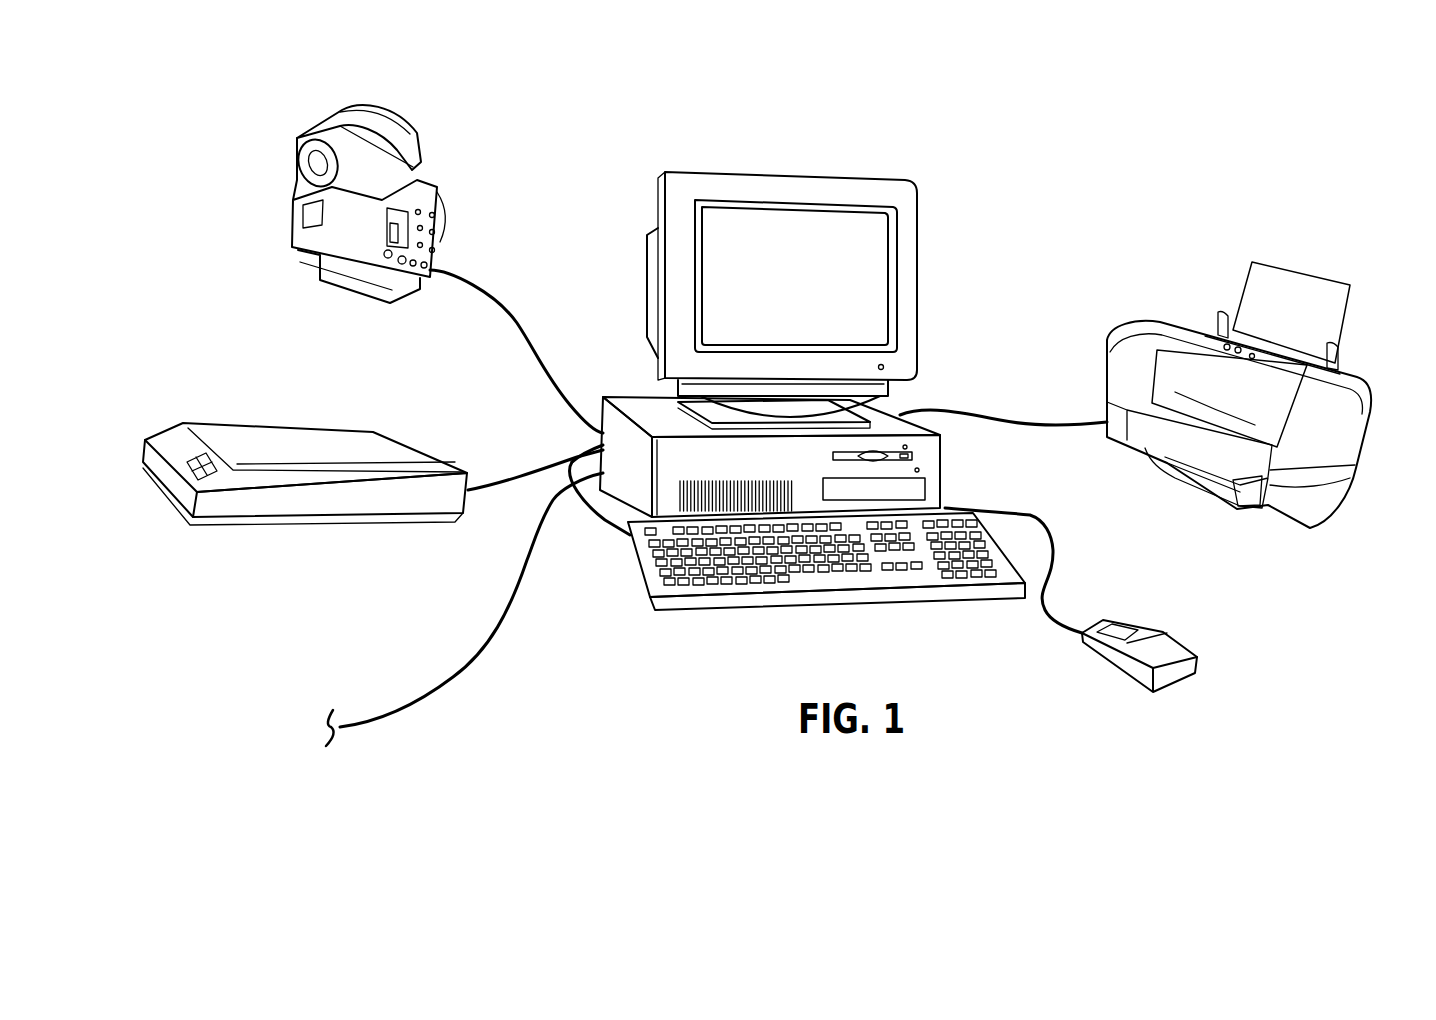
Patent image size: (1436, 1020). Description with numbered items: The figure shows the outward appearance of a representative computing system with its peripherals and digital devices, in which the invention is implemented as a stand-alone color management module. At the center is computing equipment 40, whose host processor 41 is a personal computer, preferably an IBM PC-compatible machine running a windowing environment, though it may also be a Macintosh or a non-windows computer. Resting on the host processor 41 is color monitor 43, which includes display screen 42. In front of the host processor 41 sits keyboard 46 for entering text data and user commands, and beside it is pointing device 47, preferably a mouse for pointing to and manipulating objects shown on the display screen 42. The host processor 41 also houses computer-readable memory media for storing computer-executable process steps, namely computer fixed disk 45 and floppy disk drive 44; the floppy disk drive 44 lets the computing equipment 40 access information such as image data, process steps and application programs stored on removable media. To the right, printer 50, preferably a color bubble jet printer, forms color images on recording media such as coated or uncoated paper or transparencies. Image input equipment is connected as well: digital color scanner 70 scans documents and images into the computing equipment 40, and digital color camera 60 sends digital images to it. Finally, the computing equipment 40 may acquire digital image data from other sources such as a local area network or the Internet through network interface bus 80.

The computing equipment 40 is at (963, 173).
The host processor 41 is at (615, 393).
The display screen 42 is at (872, 303).
The color monitor 43 is at (762, 173).
The floppy disk drive 44 is at (893, 455).
The computer fixed disk 45 is at (918, 492).
The keyboard 46 is at (717, 590).
The pointing device 47 is at (1177, 682).
The printer 50 is at (1105, 257).
The digital color camera 60 is at (437, 182).
The digital color scanner 70 is at (353, 530).
The network interface bus 80 is at (393, 753).